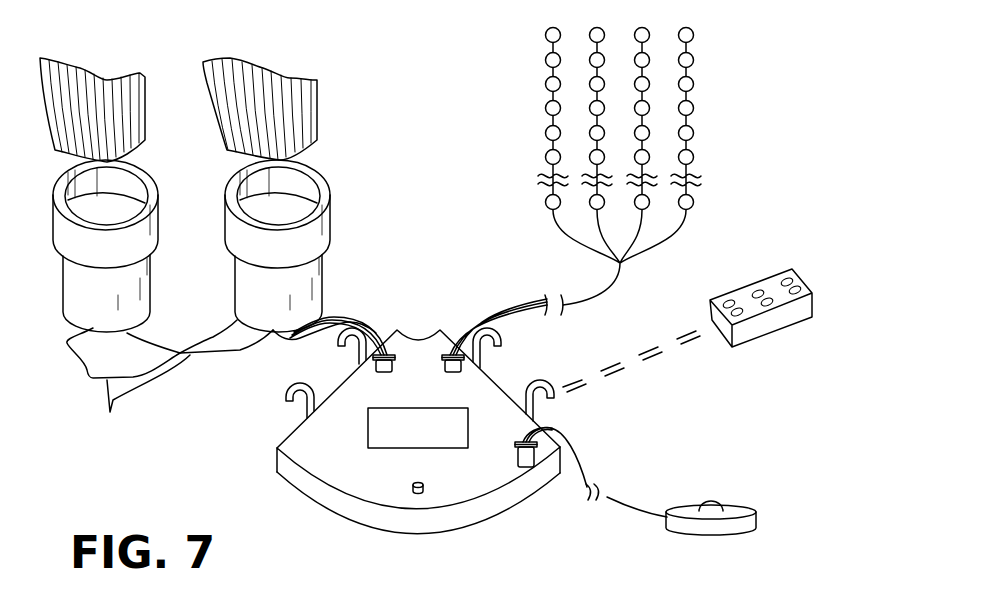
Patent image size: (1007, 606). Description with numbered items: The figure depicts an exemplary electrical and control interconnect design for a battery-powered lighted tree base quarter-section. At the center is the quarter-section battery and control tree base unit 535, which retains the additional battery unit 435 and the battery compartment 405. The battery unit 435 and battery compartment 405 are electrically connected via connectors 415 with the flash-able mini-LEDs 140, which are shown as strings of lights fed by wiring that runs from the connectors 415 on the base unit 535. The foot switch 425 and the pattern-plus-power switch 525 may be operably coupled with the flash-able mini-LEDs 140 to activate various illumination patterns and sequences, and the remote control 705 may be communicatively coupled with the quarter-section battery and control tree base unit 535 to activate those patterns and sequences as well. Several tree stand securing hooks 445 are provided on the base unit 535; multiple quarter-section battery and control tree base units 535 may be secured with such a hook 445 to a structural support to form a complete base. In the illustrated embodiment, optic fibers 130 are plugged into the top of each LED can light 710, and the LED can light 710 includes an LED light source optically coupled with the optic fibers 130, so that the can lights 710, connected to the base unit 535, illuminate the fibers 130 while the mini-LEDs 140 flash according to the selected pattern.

The optic fibers 130 is at (217, 58).
The flash-able mini-LEDs 140 is at (547, 60).
The connectors 415 is at (447, 350).
The tree stand securing hook 445 is at (287, 392).
The additional battery unit 435 is at (277, 450).
The quarter-section battery and control tree base unit 535 is at (482, 528).
The battery compartment 405 is at (366, 440).
The pattern-plus-power switch 525 is at (415, 490).
The foot switch 425 is at (710, 500).
The remote control 705 is at (767, 278).
The LED can light 710 is at (221, 381).